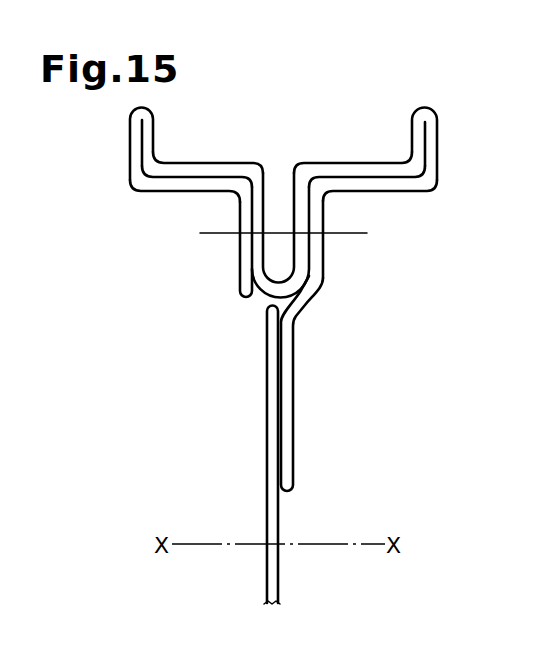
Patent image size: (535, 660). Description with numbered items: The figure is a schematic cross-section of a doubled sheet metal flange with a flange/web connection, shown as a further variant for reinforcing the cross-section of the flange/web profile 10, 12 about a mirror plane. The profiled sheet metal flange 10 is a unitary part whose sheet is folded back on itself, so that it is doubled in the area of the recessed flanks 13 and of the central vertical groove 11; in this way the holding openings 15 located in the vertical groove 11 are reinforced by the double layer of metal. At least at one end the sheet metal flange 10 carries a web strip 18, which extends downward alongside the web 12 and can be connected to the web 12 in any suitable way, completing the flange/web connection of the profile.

The profiled sheet metal flange 10 is at (131, 150).
The vertical groove 11 is at (282, 200).
The web 12 is at (268, 485).
The recessed flank 13 is at (194, 150).
The holding opening 15 is at (300, 235).
The web strip 18 is at (283, 405).